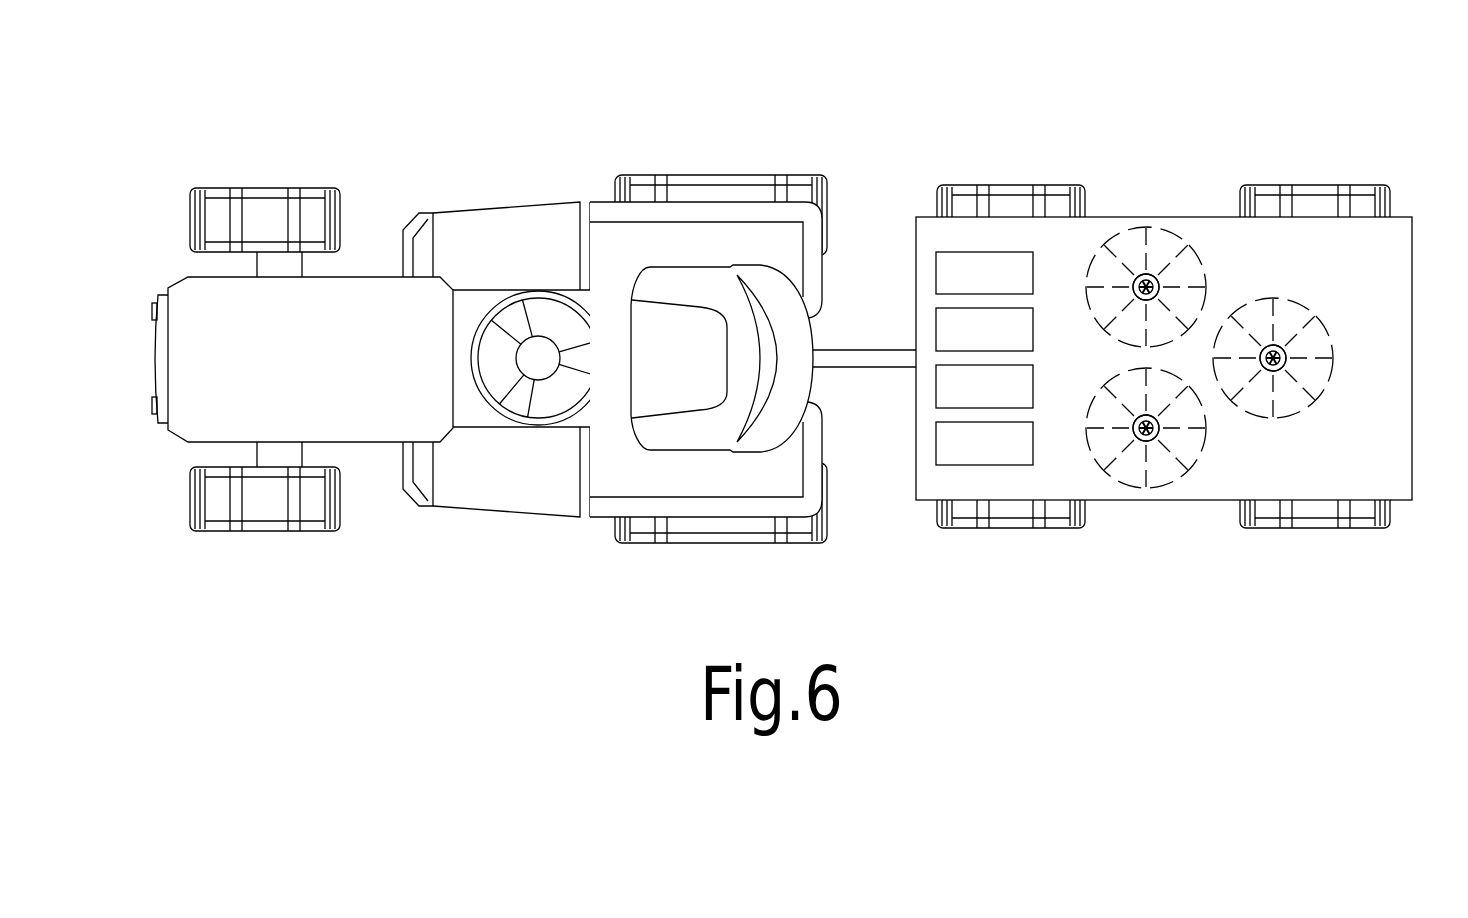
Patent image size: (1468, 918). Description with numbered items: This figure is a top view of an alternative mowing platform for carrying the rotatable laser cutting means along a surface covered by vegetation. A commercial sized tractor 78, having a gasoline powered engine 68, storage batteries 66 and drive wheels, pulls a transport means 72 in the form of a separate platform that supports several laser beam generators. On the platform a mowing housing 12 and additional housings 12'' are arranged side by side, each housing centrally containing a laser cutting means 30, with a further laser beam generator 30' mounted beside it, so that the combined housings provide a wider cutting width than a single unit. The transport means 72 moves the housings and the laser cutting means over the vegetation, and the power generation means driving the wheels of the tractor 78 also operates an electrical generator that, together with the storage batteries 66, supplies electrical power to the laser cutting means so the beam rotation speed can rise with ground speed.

The mowing housing 12 is at (1169, 246).
The housing 12'' is at (1277, 445).
The laser cutting means 30 is at (1283, 306).
The laser beam generator 30' is at (1181, 513).
The storage batteries 66 is at (985, 272).
The gasoline powered engine 68 is at (381, 312).
The transport means 72 is at (1190, 165).
The commercial sized tractor 78 is at (548, 170).